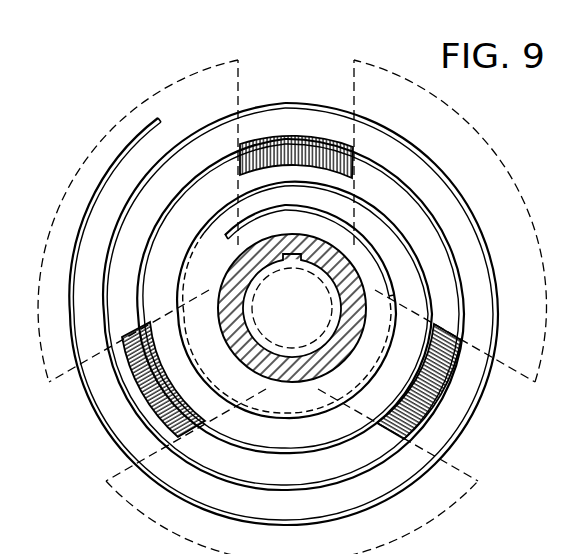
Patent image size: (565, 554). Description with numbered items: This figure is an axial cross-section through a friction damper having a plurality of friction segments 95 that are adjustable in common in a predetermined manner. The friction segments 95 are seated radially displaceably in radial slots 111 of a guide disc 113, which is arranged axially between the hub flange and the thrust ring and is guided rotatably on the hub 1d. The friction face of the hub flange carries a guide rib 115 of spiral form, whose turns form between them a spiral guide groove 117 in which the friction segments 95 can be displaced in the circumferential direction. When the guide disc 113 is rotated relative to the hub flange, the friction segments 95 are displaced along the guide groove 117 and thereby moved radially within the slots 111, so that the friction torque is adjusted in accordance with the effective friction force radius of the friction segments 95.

The hub 1d is at (297, 370).
The friction segments 95 is at (304, 152).
The radial slots 111 is at (241, 70).
The guide disc 113 is at (428, 512).
The guide rib 115 is at (447, 238).
The spiral guide groove 117 is at (418, 216).